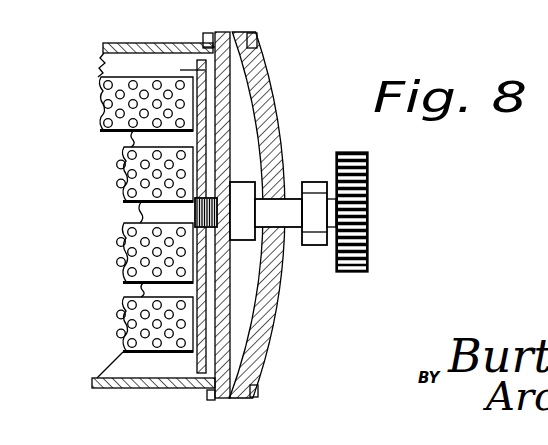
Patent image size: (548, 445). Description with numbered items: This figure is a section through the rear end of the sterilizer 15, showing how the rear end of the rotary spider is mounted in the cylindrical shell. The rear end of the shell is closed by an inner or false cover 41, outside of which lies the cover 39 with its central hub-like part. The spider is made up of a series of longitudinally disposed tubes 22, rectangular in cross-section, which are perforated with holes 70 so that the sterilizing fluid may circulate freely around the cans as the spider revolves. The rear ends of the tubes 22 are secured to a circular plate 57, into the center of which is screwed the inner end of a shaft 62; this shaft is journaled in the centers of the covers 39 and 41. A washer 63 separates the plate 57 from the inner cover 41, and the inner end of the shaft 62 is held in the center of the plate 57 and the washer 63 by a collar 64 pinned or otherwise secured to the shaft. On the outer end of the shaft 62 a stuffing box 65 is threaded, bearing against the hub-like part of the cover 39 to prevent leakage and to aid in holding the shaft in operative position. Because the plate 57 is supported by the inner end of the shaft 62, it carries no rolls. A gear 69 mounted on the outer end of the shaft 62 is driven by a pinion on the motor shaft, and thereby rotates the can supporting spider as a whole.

The sterilizer 15 is at (130, 43).
The holes 70 is at (121, 114).
The tubes 22 is at (182, 70).
The circular plate 57 is at (205, 88).
The washer 63 is at (232, 263).
The cover 39 is at (263, 115).
The inner or false cover 41 is at (235, 327).
The collar 64 is at (245, 182).
The shaft 62 is at (291, 202).
The stuffing box 65 is at (266, 207).
The gear 69 is at (368, 173).